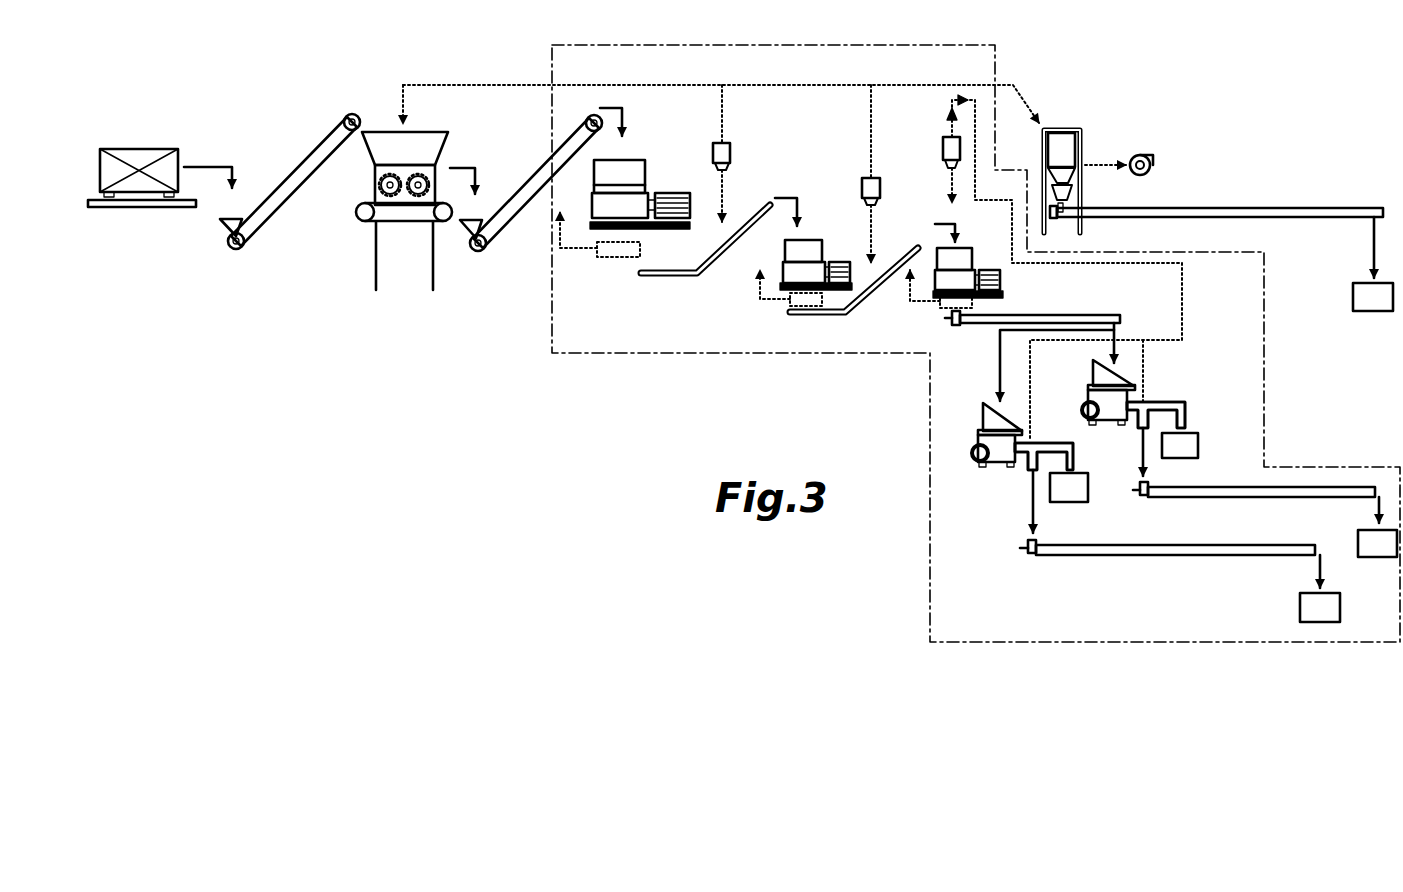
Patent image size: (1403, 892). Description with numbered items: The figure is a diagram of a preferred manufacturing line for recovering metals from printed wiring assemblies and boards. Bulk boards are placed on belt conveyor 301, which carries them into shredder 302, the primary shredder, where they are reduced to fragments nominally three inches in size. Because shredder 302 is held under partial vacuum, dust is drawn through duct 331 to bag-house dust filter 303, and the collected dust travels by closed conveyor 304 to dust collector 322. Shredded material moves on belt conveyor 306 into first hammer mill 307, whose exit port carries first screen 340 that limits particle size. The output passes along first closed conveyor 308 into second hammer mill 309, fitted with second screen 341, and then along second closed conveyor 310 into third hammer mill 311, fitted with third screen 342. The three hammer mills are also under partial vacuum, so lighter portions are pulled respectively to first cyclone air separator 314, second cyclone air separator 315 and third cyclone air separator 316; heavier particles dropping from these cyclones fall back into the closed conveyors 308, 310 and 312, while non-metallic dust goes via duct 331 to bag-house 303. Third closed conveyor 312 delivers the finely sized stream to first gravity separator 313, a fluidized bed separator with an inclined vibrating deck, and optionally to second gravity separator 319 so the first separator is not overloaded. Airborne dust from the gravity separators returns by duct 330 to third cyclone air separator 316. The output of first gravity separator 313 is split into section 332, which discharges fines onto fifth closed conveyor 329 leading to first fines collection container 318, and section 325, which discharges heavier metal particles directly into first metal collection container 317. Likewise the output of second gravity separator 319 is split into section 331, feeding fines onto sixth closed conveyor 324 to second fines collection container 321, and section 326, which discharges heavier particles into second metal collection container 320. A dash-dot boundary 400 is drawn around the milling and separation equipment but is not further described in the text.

The belt conveyor 301 is at (266, 190).
The shredder 302 is at (418, 132).
The bag-house dust filter 303 is at (1072, 130).
The fourth closed conveyor 304 is at (1335, 218).
The belt conveyor 306 is at (512, 192).
The first hammer mill 307 is at (661, 189).
The first closed conveyor 308 is at (668, 278).
The second hammer mill 309 is at (833, 257).
The second closed conveyor 310 is at (828, 312).
The third hammer mill 311 is at (979, 261).
The third closed conveyor 312 is at (1062, 315).
The first gravity separator 313 is at (1071, 389).
The first cyclone air separator 314 is at (732, 153).
The second cyclone air separator 315 is at (862, 188).
The third cyclone air separator 316 is at (943, 152).
The first metal collection container 317 is at (1175, 458).
The first fines collection container 318 is at (1385, 557).
The second gravity separator 319 is at (975, 414).
The second metal collection container 320 is at (146, 118).
The second fines collection container 321 is at (1300, 612).
The dust collector 322 is at (1352, 298).
The sixth closed conveyor 324 is at (1215, 555).
The section 325 is at (1185, 418).
The section 326 is at (1075, 462).
The fifth closed conveyor 329 is at (1320, 497).
The duct 330 is at (1183, 305).
The duct 331 is at (1018, 87).
The section 332 is at (1143, 402).
The first screen 340 is at (625, 258).
The second screen 341 is at (790, 303).
The third screen 342 is at (945, 308).
The processing system boundary 400 is at (790, 355).